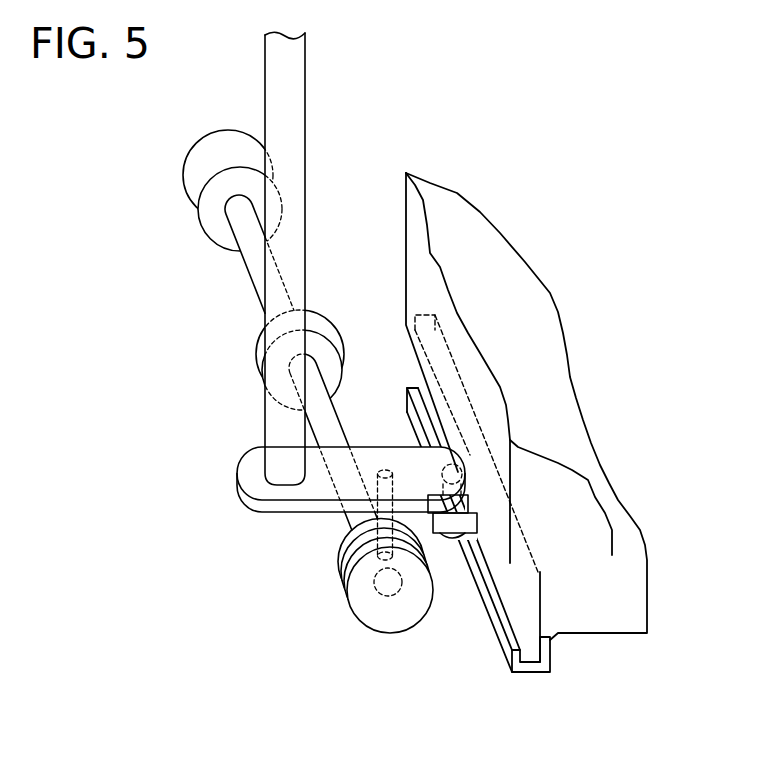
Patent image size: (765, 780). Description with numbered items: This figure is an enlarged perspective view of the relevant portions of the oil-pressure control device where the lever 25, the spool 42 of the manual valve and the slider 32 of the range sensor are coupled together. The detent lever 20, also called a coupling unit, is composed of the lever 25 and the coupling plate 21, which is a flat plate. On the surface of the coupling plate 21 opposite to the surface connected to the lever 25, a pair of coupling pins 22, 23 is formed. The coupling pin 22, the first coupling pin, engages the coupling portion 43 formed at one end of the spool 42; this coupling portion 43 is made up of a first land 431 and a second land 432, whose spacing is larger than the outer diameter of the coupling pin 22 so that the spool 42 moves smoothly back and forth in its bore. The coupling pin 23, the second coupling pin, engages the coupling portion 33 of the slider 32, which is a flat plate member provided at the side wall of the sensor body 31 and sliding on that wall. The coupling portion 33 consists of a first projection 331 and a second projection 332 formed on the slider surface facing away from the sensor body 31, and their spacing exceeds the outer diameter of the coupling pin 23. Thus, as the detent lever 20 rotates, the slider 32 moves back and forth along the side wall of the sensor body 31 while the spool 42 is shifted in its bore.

The detent lever 20 is at (303, 272).
The coupling plate 21 is at (262, 490).
The coupling pin 22 is at (378, 480).
The coupling pin 23 is at (462, 497).
The lever 25 is at (275, 441).
The sensor body 31 is at (617, 582).
The slider 32 is at (487, 547).
The coupling portion 33 is at (477, 504).
The first projection 331 is at (460, 547).
The second projection 332 is at (450, 541).
The spool 42 is at (247, 270).
The coupling portion 43 is at (360, 624).
The first land 431 is at (366, 600).
The second land 432 is at (347, 553).